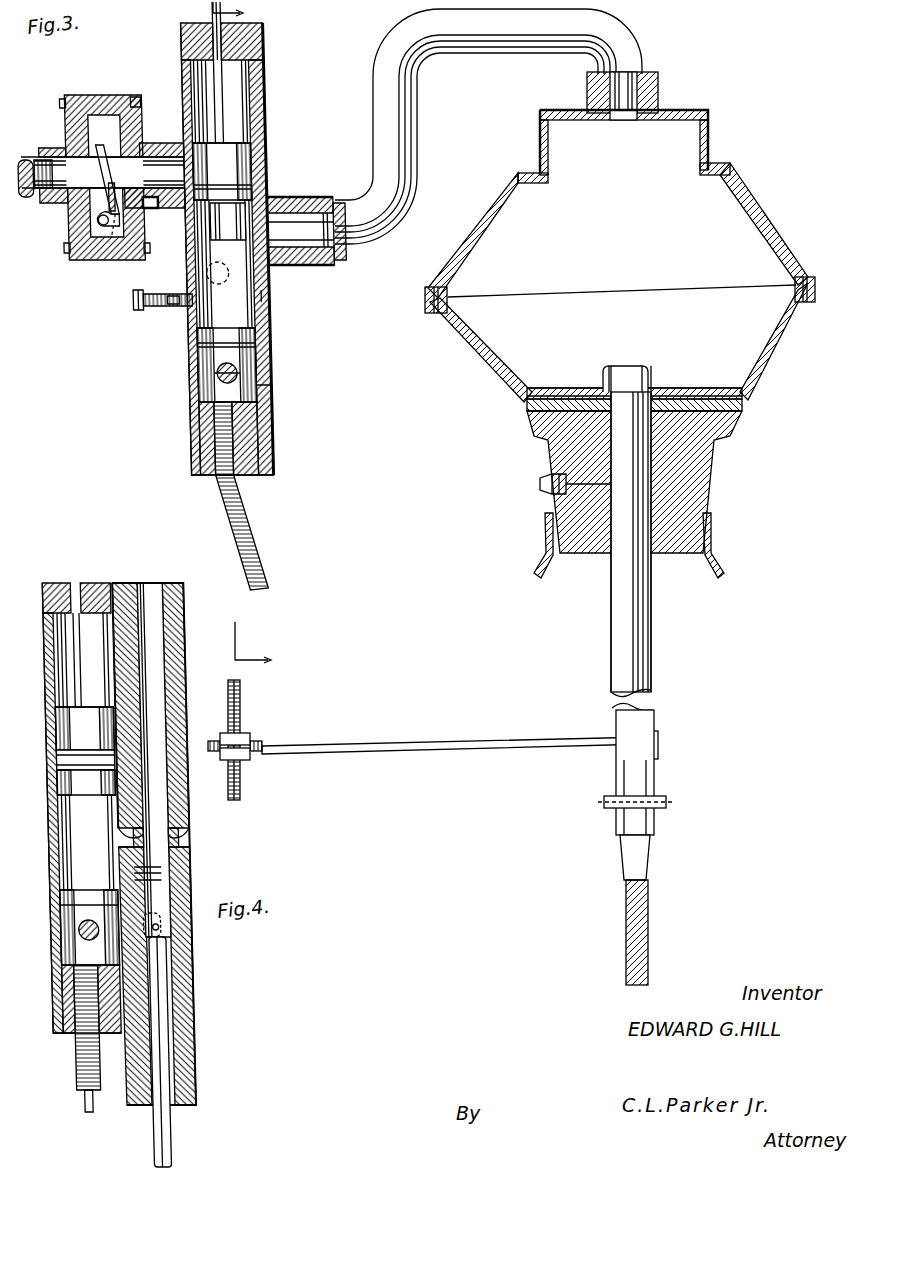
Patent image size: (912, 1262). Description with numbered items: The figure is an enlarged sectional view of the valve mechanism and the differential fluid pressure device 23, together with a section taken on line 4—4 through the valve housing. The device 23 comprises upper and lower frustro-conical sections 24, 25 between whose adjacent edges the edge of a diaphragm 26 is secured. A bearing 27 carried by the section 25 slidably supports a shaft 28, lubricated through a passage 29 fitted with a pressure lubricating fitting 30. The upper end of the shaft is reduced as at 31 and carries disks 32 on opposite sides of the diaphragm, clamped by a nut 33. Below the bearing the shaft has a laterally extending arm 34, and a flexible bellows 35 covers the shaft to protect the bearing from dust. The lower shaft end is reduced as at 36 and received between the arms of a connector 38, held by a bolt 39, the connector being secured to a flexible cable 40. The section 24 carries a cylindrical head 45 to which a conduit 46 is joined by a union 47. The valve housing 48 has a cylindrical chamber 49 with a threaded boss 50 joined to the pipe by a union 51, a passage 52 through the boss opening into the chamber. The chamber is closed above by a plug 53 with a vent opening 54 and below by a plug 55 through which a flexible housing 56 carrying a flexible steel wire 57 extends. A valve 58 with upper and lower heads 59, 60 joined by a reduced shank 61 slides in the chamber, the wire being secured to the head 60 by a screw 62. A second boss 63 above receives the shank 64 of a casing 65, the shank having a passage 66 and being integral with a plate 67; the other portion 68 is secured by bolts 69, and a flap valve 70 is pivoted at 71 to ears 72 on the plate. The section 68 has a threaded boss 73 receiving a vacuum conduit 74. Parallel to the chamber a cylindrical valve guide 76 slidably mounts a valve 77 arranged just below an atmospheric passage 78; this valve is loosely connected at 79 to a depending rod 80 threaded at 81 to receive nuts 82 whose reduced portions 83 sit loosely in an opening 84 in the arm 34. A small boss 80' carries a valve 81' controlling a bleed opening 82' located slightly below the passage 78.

In FIG. 3, the section line 4— 4 is at (254, 337).
In FIG. 3, the differential fluid pressure device 23 is at (756, 212).
In FIG. 3, the upper frustro-conical section 24 is at (770, 246).
In FIG. 3, the lower frustro-conical section 25 is at (783, 348).
In FIG. 3, the diaphragm 26 is at (752, 348).
In FIG. 3, the bearing 27 is at (714, 452).
In FIG. 3, the shaft 28 is at (610, 628).
In FIG. 3, the passage 29 is at (562, 496).
In FIG. 3, the pressure lubricating fitting 30 is at (540, 484).
In FIG. 3, the reduced upper end of shaft 31 is at (652, 392).
In FIG. 3, the disks 32 is at (700, 386).
In FIG. 3, the nut 33 is at (636, 366).
In FIG. 3, the laterally extending arm 34 is at (548, 742).
In FIG. 3, the flexible bellows 35 is at (720, 570).
In FIG. 3, the reduced lower end of shaft 36 is at (660, 790).
In FIG. 3, the connector 38 is at (620, 846).
In FIG. 3, the bolt 39 is at (666, 802).
In FIG. 3, the flexible cable 40 is at (648, 938).
In FIG. 3, the cylindrical head 45 is at (710, 140).
In FIG. 3, the conduit 46 is at (596, 30).
In FIG. 3, the union 47 is at (660, 92).
In FIG. 3, the valve housing 48 is at (262, 128).
In FIG. 3, the cylindrical chamber 49 is at (194, 80).
In FIG. 4, the cylindrical chamber 49 is at (81, 808).
In FIG. 3, the threaded boss 50 is at (272, 200).
In FIG. 3, the union 51 is at (322, 266).
In FIG. 3, the passage 52 is at (350, 250).
In FIG. 3, the plug 53 is at (240, 42).
In FIG. 3, the vent opening 54 is at (218, 68).
In FIG. 4, the vent opening 54 is at (76, 604).
In FIG. 3, the plug 55 is at (258, 432).
In FIG. 4, the plug 55 is at (66, 1030).
In FIG. 3, the flexible housing 56 is at (248, 522).
In FIG. 4, the flexible housing 56 is at (80, 1086).
In FIG. 3, the flexible steel wire 57 is at (262, 385).
In FIG. 4, the flexible steel wire 57 is at (90, 1114).
In FIG. 3, the valve 58 is at (212, 136).
In FIG. 4, the valve 58 is at (102, 698).
In FIG. 3, the upper head 59 is at (233, 156).
In FIG. 4, the upper head 59 is at (85, 738).
In FIG. 3, the lower head 60 is at (250, 352).
In FIG. 4, the lower head 60 is at (88, 927).
In FIG. 3, the reduced shank 61 is at (226, 243).
In FIG. 4, the reduced shank 61 is at (86, 783).
In FIG. 3, the screw 62 is at (206, 373).
In FIG. 4, the screw 62 is at (86, 924).
In FIG. 3, the second boss 63 is at (158, 152).
In FIG. 3, the shank 64 is at (152, 208).
In FIG. 3, the casing 65 is at (99, 88).
In FIG. 3, the passage 66 is at (142, 144).
In FIG. 3, the plate 67 is at (128, 95).
In FIG. 3, the casing section 68 is at (80, 258).
In FIG. 3, the bolts 69 is at (60, 100).
In FIG. 3, the flap valve 70 is at (96, 148).
In FIG. 3, the pivot 71 is at (96, 222).
In FIG. 3, the ears 72 is at (112, 226).
In FIG. 3, the internally threaded boss 73 is at (50, 200).
In FIG. 3, the vacuum conduit 74 is at (24, 162).
In FIG. 4, the cylindrical valve guide 76 is at (146, 592).
In FIG. 4, the valve 77 is at (160, 880).
In FIG. 3, the passage 78 is at (245, 292).
In FIG. 4, the passage 78 is at (136, 838).
In FIG. 4, the loose connection 79 is at (160, 925).
In FIG. 3, the depending rod 80 is at (257, 736).
In FIG. 4, the depending rod 80 is at (178, 1052).
In FIG. 3, the threaded lower end 81 is at (248, 720).
In FIG. 3, the nuts 82 is at (267, 729).
In FIG. 3, the central reduced portions 83 is at (250, 740).
In FIG. 3, the opening 84 is at (255, 760).
In FIG. 3, the small boss 80' is at (148, 312).
In FIG. 3, the valve 81' is at (167, 285).
In FIG. 3, the bleed opening 82' is at (170, 325).